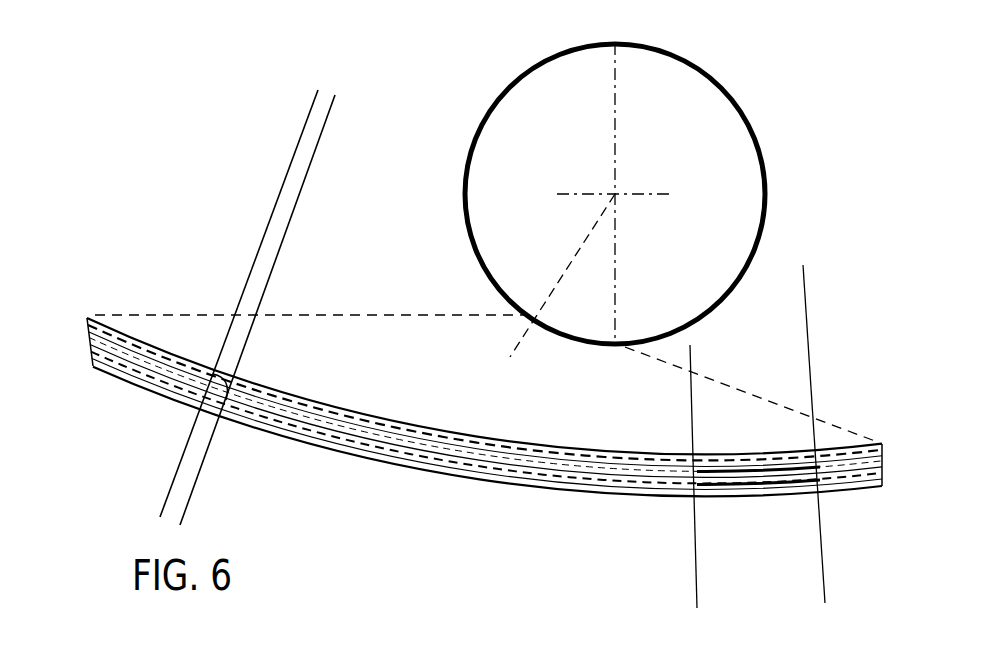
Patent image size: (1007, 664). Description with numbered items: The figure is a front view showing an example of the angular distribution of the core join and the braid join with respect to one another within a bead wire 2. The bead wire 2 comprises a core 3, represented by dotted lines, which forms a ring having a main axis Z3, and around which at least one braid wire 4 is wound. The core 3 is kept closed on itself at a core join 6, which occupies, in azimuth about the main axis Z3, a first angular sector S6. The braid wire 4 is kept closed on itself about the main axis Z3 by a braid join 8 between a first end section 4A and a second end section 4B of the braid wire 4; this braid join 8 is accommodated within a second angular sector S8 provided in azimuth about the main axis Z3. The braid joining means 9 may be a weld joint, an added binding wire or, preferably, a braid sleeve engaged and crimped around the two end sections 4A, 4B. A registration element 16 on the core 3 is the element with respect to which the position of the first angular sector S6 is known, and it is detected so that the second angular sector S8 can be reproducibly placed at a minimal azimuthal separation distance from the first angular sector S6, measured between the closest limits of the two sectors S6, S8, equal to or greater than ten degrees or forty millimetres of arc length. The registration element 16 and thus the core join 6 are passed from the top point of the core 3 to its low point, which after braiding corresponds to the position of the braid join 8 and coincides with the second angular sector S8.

The bead wire 2 is at (766, 180).
The core 3 is at (125, 368).
The main axis Z3 is at (616, 193).
The braid wire 4 is at (470, 445).
The first end section of the braid wire 4A is at (675, 465).
The second end section of the braid wire 4B is at (839, 465).
The core join 6 is at (243, 372).
The braid join 8 is at (616, 346).
The braid joining means 9 is at (744, 488).
The registration element 16 is at (210, 350).
The first angular sector S6 is at (574, 320).
The second angular sector S8 is at (588, 323).